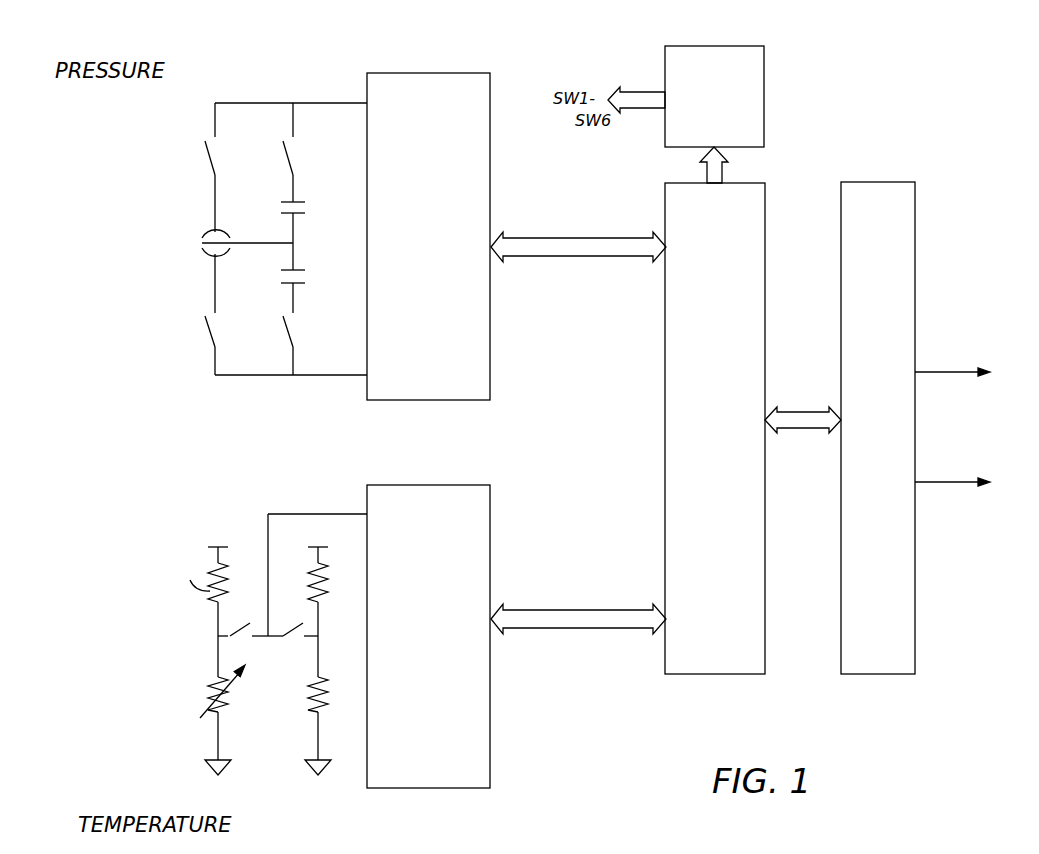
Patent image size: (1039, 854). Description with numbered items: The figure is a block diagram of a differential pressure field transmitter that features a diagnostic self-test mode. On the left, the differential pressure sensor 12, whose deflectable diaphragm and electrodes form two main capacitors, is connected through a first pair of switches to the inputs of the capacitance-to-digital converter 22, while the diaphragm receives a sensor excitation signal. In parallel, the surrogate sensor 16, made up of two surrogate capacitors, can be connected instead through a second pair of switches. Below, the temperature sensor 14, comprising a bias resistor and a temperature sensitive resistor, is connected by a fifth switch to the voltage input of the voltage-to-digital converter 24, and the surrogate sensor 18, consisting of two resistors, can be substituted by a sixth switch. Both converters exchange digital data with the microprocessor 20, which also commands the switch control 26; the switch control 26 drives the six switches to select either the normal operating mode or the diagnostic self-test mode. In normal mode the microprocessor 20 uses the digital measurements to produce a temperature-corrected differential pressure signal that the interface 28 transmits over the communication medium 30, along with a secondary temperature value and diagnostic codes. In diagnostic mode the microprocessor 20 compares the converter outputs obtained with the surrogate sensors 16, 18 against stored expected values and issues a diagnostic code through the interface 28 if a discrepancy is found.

The differential pressure sensor 12 is at (238, 92).
The temperature sensor 14 is at (195, 738).
The surrogate sensor 16 is at (333, 92).
The surrogate sensor 18 is at (300, 716).
The microprocessor 20 is at (690, 674).
The capacitance-to-digital converter 22 is at (490, 342).
The voltage-to-digital converter 24 is at (450, 485).
The switch control 26 is at (764, 120).
The interface 28 is at (857, 182).
The communication medium 30 is at (948, 343).